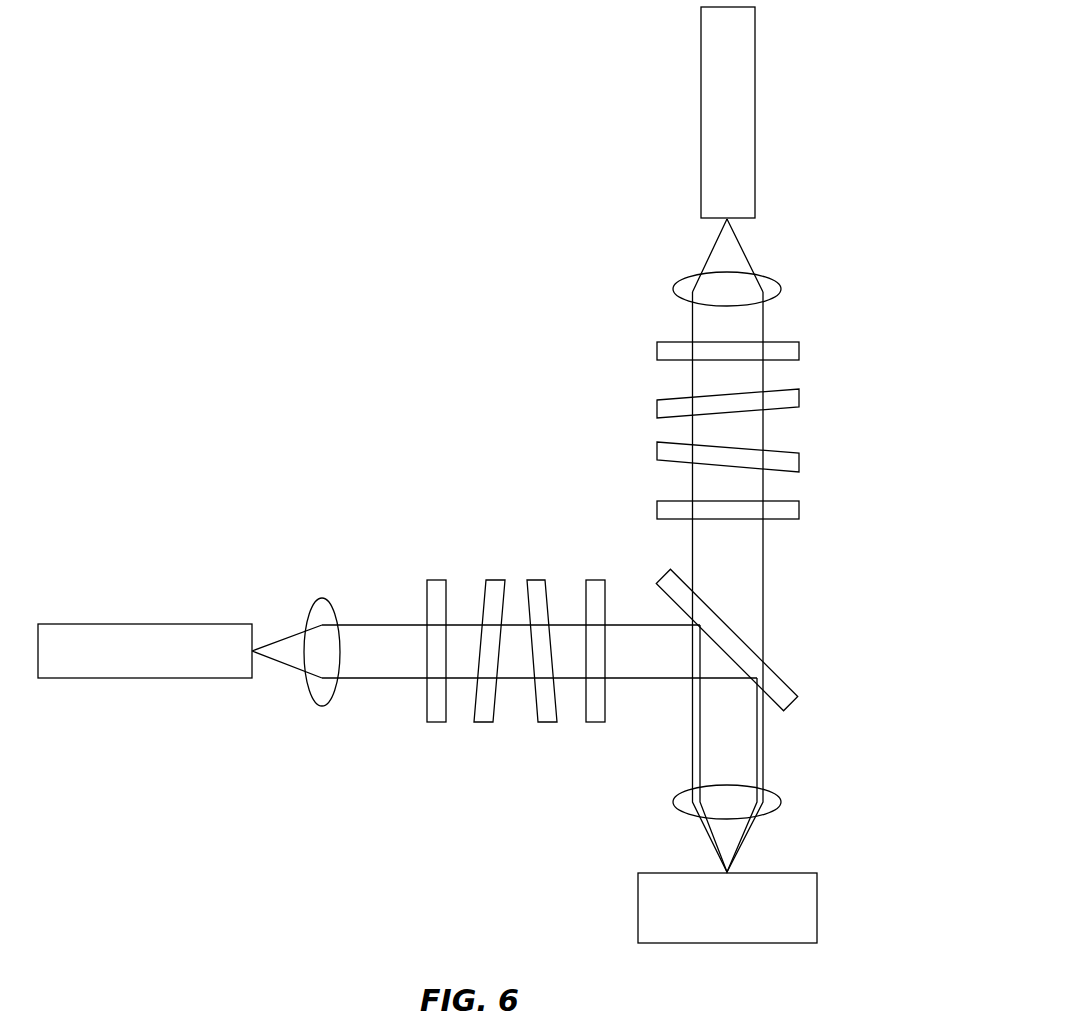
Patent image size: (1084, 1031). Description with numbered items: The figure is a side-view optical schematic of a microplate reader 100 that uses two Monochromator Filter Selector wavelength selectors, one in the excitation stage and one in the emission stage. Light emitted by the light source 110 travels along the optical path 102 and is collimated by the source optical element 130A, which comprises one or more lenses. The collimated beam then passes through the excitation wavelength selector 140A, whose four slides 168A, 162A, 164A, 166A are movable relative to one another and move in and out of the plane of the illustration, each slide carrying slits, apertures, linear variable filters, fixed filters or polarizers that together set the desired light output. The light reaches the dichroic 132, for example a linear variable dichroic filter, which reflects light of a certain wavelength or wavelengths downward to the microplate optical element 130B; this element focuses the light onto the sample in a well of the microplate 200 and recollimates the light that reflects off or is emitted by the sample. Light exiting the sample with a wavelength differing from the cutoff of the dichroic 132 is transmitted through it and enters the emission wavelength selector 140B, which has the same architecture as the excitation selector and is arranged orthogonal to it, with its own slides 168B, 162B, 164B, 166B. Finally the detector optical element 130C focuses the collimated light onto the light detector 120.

The microplate reader 100 is at (372, 306).
The optical path 102 is at (764, 585).
The light source 110 is at (74, 622).
The light detector 120 is at (755, 57).
The source optical element 130A is at (321, 598).
The microplate optical element 130B is at (776, 793).
The detector optical element 130C is at (773, 277).
The dichroic 132 is at (790, 690).
The excitation wavelength selector 140A is at (514, 651).
The emission wavelength selector 140B is at (725, 420).
The slide 162A is at (493, 580).
The slide 162B is at (657, 445).
The slide 164A is at (535, 580).
The slide 164B is at (657, 404).
The slide 166A is at (592, 580).
The slide 166B is at (657, 345).
The slide 168A is at (436, 580).
The slide 168B is at (657, 503).
The microplate 200 is at (727, 908).